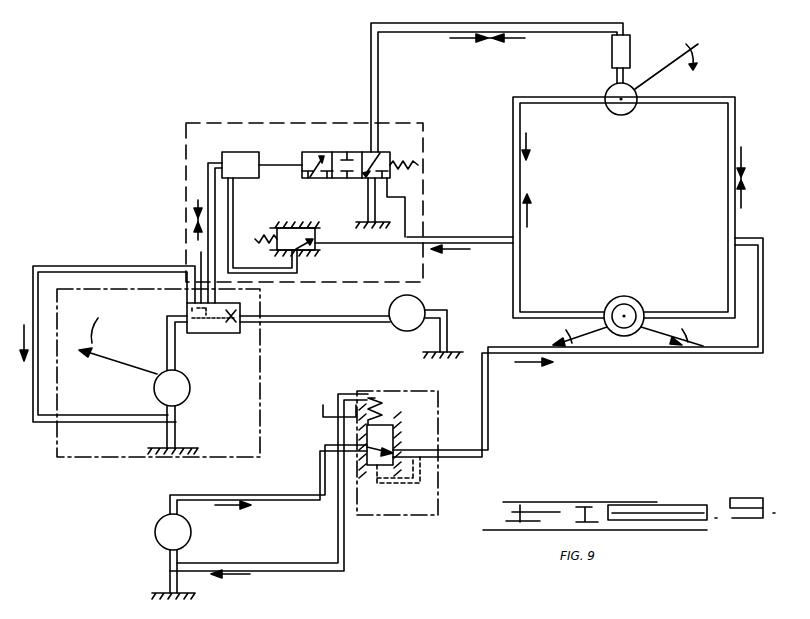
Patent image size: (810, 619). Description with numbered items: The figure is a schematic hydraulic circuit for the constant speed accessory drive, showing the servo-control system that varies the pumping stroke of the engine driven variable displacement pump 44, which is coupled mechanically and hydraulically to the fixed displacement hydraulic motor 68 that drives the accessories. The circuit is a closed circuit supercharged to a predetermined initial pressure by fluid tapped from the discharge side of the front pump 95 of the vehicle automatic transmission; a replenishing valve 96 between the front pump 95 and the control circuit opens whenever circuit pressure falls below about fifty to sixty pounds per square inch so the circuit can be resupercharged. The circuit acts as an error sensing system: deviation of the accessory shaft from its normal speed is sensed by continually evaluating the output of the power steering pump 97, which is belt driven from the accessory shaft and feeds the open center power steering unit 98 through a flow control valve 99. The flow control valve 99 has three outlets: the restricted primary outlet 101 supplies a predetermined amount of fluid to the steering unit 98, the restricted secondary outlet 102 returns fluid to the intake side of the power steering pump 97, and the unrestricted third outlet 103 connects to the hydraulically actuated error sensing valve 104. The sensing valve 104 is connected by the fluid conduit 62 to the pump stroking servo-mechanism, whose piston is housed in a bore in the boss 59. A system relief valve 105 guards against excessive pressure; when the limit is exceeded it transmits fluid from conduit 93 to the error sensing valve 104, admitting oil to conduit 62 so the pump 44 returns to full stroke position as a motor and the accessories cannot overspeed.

The fluid conduit 62 is at (540, 24).
The boss 59 is at (631, 46).
The variable displacement pump 44 is at (621, 115).
The conduit 93 is at (512, 155).
The fixed displacement hydraulic motor 68 is at (640, 301).
The hydraulically actuated error sensing valve 104 is at (323, 152).
The system relief valve 105 is at (315, 250).
The third outlet 103 is at (201, 252).
The secondary outlet 102 is at (127, 266).
The flow control valve 99 is at (208, 333).
The primary outlet 101 is at (275, 316).
The power steering unit 98 is at (407, 331).
The power steering pump 97 is at (190, 388).
The replenishing valve 96 is at (397, 502).
The front pump 95 is at (191, 532).